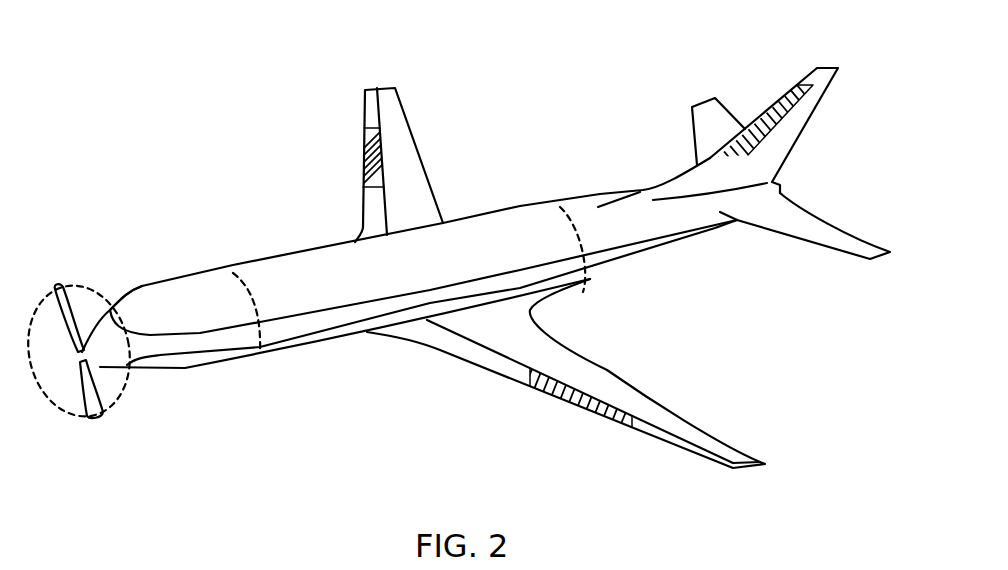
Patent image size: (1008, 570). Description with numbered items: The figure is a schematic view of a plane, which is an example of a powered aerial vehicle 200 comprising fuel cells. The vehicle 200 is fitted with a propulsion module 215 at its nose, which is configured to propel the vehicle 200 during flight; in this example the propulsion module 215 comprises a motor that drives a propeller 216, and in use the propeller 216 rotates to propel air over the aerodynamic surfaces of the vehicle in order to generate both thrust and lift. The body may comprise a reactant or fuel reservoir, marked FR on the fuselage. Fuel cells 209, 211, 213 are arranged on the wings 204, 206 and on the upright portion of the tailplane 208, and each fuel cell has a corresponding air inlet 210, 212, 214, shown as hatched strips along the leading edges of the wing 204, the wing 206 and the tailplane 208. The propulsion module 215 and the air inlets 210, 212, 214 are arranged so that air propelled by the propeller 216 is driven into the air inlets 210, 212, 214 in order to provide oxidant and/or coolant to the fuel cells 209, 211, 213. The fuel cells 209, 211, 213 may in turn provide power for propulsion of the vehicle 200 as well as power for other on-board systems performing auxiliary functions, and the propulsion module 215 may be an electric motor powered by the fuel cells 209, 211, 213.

The powered aerial vehicle 200 is at (139, 128).
The wing 204 is at (380, 87).
The wing 206 is at (750, 465).
The tailplane 208 is at (812, 70).
The fuel cell 209 is at (397, 147).
The air inlet 210 is at (366, 153).
The fuel cell 211 is at (588, 383).
The air inlet 212 is at (565, 405).
The fuel cell 213 is at (770, 137).
The air inlet 214 is at (763, 110).
The propulsion module 215 is at (104, 325).
The propeller 216 is at (60, 282).